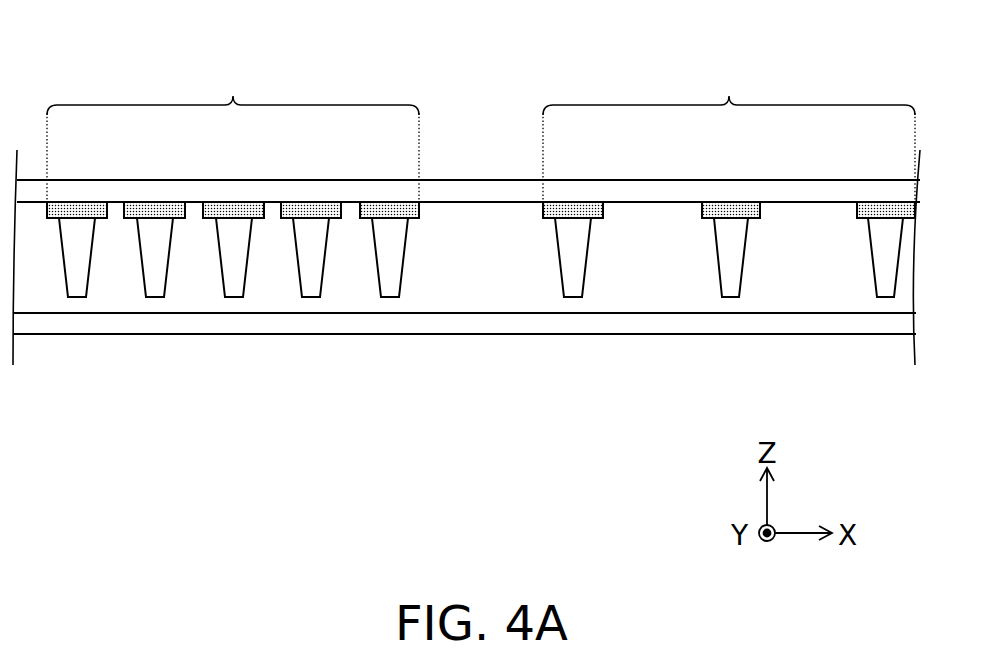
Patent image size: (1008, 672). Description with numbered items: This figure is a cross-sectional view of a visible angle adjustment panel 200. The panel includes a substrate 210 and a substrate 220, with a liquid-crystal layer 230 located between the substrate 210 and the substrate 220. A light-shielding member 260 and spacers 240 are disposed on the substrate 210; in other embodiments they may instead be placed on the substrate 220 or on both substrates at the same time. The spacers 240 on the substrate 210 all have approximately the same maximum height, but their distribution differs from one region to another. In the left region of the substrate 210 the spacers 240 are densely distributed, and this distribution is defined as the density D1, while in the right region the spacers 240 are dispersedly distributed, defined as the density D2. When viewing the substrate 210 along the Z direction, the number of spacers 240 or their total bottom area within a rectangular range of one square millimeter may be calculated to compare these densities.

The visible angle adjustment panel 200 is at (108, 25).
The substrate 210 is at (584, 188).
The substrate 220 is at (294, 323).
The liquid-crystal layer 230 is at (476, 280).
The spacer 240 is at (235, 263).
The light-shielding member 260 is at (878, 205).
The density D1 is at (233, 132).
The density D2 is at (729, 131).